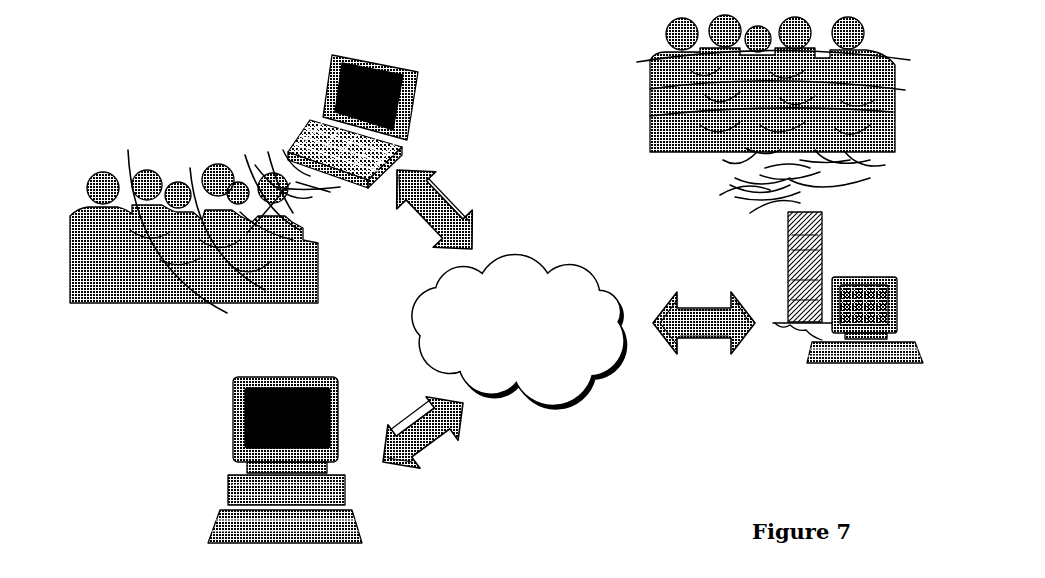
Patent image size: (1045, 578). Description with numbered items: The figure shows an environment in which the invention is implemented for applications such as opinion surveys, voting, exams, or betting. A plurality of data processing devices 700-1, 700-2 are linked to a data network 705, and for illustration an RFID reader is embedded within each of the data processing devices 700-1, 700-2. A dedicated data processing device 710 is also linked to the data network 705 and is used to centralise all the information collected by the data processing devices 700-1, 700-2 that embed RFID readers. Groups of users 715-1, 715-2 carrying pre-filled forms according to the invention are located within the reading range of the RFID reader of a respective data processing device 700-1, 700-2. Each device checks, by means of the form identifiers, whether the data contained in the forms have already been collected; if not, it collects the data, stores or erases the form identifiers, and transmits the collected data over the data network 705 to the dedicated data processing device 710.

The data processing device 700-1 is at (386, 63).
The data processing device 700-2 is at (862, 363).
The data network 705 is at (595, 384).
The dedicated data processing device 710 is at (227, 492).
The users 715-1 is at (132, 303).
The users 715-2 is at (650, 145).